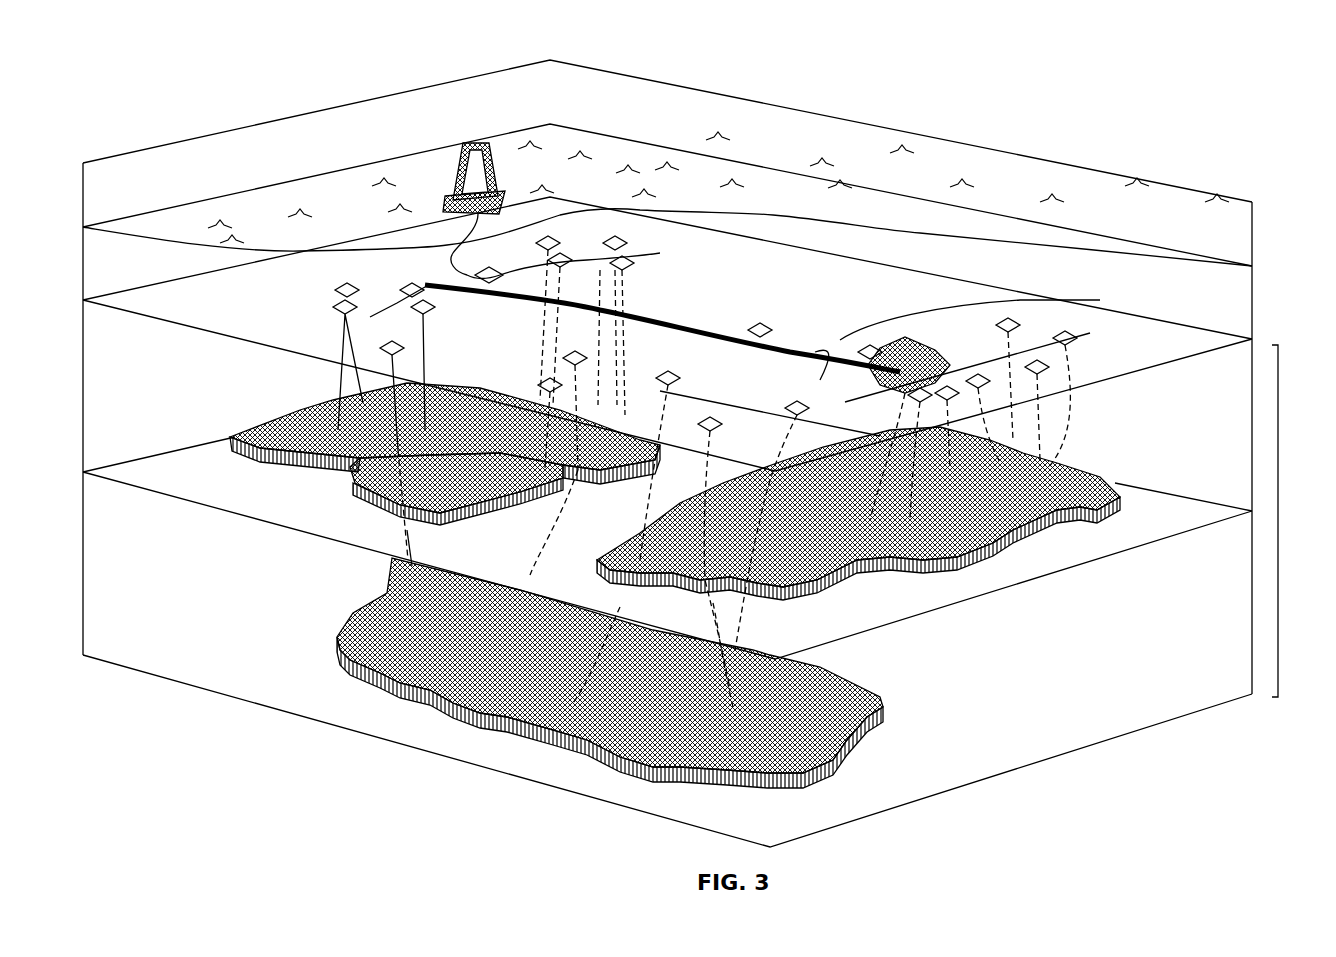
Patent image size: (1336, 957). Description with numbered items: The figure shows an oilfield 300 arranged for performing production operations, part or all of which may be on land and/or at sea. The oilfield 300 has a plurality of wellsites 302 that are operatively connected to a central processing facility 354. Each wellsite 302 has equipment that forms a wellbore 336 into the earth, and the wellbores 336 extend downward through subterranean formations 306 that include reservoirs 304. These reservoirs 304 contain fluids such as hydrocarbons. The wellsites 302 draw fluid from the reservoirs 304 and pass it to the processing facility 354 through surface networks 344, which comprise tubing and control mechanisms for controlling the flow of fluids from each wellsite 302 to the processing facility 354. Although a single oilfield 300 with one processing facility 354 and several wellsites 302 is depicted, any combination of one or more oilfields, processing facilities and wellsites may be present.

The oilfield 300 is at (128, 68).
The central processing facility 354 is at (457, 164).
The surface networks 344 is at (384, 312).
The wellsites 302 is at (1069, 318).
The wellbore 336 is at (1066, 421).
The subterranean formations 306 is at (1281, 520).
The reservoirs 304 is at (890, 710).